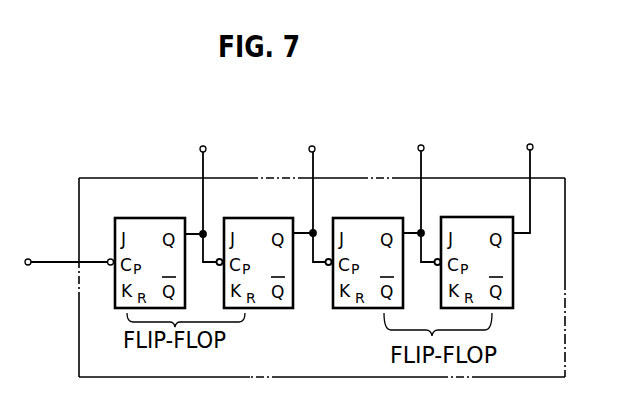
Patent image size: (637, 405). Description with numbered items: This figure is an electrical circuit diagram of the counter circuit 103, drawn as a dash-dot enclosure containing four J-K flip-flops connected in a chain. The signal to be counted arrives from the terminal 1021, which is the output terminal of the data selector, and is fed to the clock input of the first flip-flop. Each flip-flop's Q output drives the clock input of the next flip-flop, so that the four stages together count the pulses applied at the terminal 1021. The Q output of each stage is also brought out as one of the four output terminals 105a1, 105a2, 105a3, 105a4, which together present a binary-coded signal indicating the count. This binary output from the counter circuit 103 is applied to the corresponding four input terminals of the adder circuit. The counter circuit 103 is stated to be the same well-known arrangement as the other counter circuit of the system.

The counter circuit 103 is at (137, 178).
The output terminal 1021 is at (69, 248).
The output terminal 105a1 is at (194, 177).
The output terminal 105a2 is at (314, 177).
The output terminal 105a3 is at (425, 177).
The output terminal 105a4 is at (535, 177).